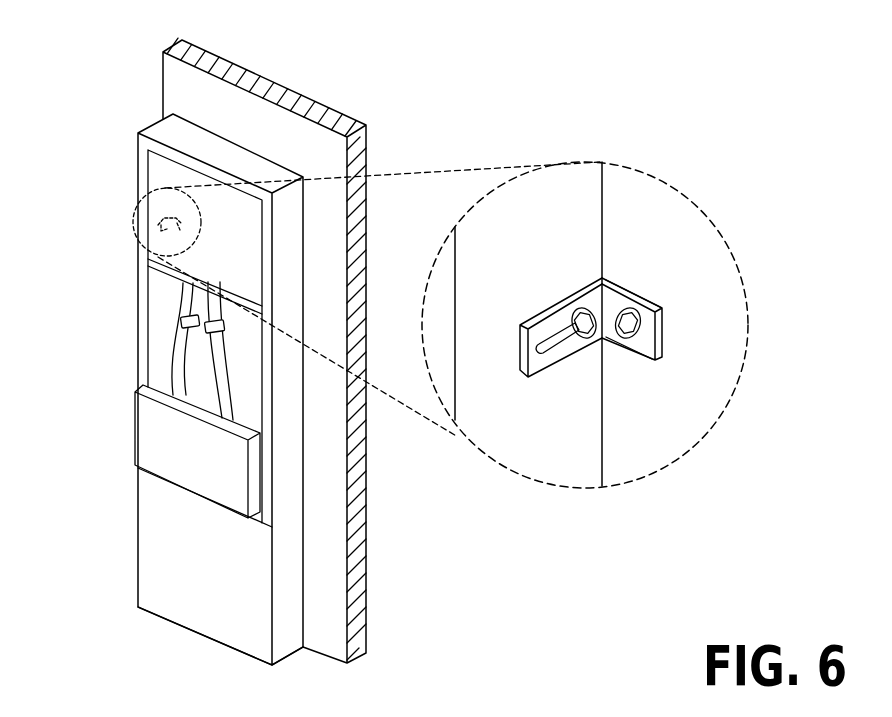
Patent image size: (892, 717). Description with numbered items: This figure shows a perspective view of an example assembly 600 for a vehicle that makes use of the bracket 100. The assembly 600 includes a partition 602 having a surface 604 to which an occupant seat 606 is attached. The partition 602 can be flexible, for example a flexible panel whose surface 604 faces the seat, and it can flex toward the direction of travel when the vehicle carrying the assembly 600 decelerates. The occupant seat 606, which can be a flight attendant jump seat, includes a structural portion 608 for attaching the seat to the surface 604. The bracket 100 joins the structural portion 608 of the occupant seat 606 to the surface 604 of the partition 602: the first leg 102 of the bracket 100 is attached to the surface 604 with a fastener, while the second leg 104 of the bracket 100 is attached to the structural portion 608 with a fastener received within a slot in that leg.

The assembly 600 is at (56, 88).
The partition 602 is at (190, 39).
The surface 604 is at (178, 97).
The occupant seat 606 is at (270, 666).
The structural portion 608 is at (545, 467).
The bracket 100 is at (150, 212).
The first leg 102 is at (617, 284).
The second leg 104 is at (577, 356).